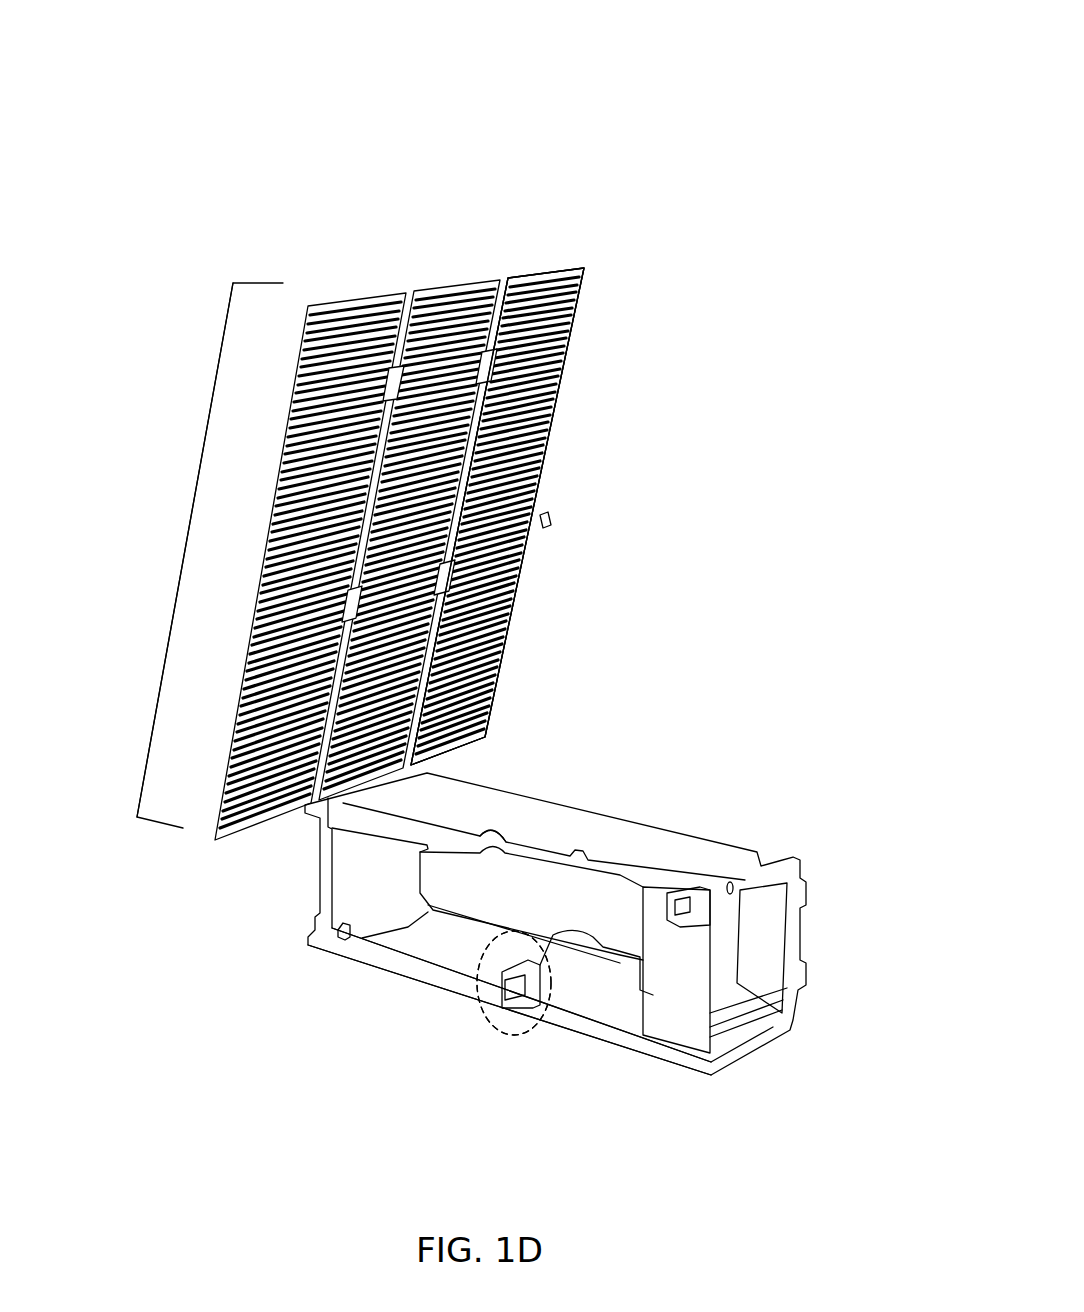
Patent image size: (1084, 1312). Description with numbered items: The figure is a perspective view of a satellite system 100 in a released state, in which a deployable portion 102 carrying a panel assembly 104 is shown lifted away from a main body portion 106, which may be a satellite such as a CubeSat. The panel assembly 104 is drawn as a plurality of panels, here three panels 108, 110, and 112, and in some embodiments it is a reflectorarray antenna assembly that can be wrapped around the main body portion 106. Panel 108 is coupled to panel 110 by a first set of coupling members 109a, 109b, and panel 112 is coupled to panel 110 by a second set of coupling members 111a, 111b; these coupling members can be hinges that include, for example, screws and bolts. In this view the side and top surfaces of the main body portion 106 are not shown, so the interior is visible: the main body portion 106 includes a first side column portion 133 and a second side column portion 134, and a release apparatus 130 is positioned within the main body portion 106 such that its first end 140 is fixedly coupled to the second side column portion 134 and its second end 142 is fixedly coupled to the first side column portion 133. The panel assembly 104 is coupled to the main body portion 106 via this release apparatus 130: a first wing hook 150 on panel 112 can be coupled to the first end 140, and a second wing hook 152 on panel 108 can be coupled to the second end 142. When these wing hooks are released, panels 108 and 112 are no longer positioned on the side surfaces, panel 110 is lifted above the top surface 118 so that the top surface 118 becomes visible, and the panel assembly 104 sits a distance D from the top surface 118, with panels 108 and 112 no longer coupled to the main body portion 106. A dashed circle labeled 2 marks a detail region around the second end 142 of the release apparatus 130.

The system 100 is at (330, 115).
The deployable portion 102 is at (553, 248).
The panel assembly 104 is at (185, 548).
The main body portion 106 is at (631, 887).
The panel 108 is at (340, 285).
The coupling member 109a is at (394, 382).
The coupling member 109b is at (366, 590).
The panel 110 is at (452, 272).
The coupling member 111a is at (542, 331).
The coupling member 111b is at (497, 616).
The panel 112 is at (520, 270).
The top surface 118 is at (500, 810).
The distance D is at (620, 918).
The release apparatus 130 is at (438, 1012).
The first side column portion 133 is at (616, 1064).
The second side column portion 134 is at (755, 866).
The first end 140 is at (527, 942).
The second end 142 is at (519, 988).
The first wing hook 150 is at (552, 519).
The second wing hook 152 is at (253, 605).
The detail circle 2 is at (517, 1040).